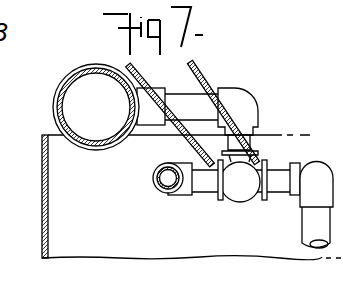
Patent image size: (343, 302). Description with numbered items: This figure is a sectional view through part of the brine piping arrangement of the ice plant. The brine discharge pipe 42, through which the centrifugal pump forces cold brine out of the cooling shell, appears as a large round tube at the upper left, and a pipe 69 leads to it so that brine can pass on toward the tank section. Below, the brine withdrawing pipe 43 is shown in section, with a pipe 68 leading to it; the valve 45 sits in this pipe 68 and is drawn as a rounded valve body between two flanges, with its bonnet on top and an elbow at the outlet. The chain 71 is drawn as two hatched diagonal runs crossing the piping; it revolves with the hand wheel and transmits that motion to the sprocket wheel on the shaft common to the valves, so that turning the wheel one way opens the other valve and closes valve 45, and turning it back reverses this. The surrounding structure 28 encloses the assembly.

The housing 28 is at (40, 195).
The brine discharge pipe 42 is at (96, 107).
The brine withdrawing pipe 43 is at (163, 181).
The valve 45 is at (242, 181).
The pipe 68 is at (278, 190).
The pipe 69 is at (185, 100).
The chain 71 is at (210, 83).